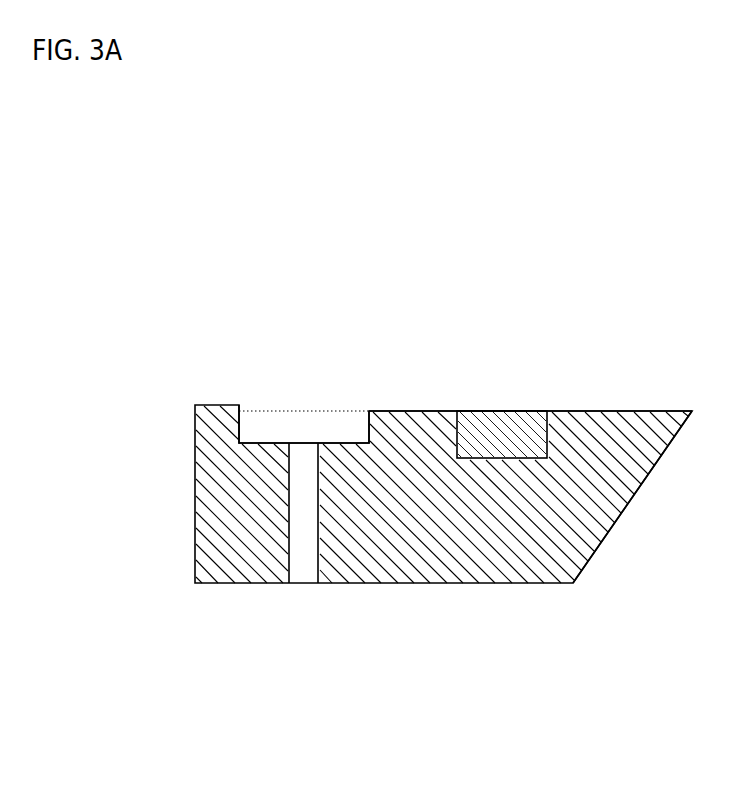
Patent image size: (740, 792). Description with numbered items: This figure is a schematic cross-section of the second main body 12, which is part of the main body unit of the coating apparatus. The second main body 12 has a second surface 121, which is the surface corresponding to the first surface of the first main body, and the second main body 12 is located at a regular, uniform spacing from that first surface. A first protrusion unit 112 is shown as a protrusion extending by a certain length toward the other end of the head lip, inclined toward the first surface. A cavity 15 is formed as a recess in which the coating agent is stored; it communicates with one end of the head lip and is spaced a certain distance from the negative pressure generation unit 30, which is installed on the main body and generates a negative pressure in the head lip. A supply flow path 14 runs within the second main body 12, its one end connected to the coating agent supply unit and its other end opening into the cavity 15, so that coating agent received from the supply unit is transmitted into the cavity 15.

The second main body 12 is at (380, 565).
The second surface 121 is at (413, 411).
The first protrusion unit 112 is at (652, 430).
The supply flow path 14 is at (304, 455).
The cavity 15 is at (271, 434).
The negative pressure generation unit 30 is at (498, 435).